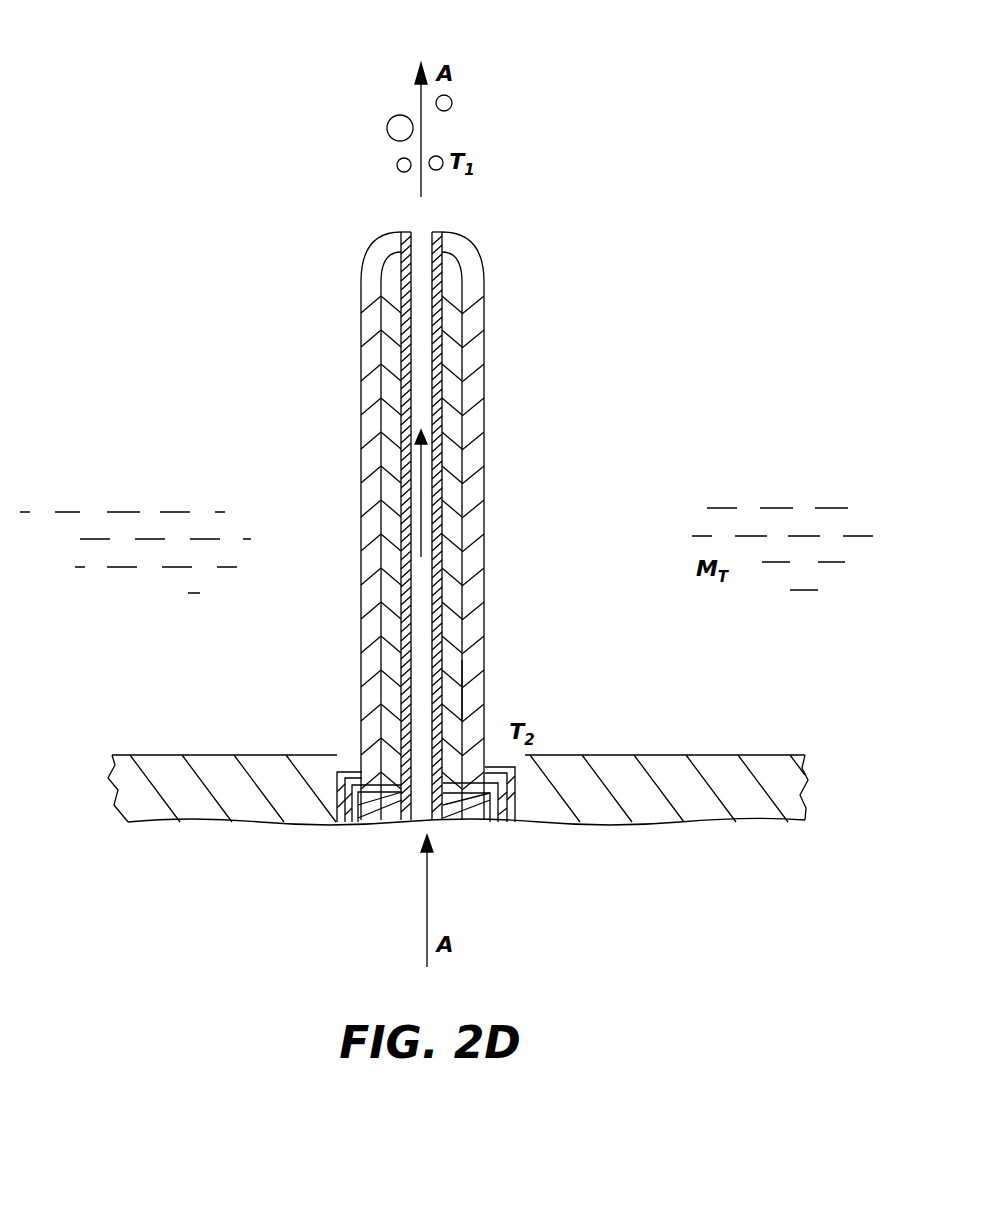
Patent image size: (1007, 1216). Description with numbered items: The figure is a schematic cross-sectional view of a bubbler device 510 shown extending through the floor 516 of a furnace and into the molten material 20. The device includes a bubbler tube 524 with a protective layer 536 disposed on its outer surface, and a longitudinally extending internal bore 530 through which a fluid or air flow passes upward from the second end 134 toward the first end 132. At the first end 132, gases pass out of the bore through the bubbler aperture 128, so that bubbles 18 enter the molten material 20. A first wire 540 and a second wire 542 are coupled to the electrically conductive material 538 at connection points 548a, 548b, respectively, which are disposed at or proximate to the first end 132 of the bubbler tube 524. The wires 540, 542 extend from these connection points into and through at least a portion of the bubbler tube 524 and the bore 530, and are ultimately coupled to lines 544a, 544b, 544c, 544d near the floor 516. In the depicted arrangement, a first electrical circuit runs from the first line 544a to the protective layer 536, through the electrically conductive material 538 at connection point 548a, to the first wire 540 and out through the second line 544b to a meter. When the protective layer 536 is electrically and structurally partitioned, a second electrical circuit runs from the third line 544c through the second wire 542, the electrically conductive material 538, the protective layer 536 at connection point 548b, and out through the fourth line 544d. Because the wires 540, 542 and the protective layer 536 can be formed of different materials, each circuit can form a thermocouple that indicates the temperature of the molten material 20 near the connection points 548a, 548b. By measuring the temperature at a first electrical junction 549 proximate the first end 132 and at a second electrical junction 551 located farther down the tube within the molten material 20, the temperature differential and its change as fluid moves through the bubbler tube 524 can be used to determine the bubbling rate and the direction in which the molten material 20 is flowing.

The bubbler device 510 is at (258, 102).
The first end 132 is at (372, 205).
The bubbler aperture 128 is at (415, 210).
The bubbles 18 is at (460, 133).
The connection point 548a is at (400, 232).
The connection point 548b is at (440, 232).
The first electrical junction 549 is at (400, 240).
The electrically conductive material 538 is at (388, 243).
The bore 530 is at (420, 345).
The first wire 540 is at (400, 378).
The bubbler tube 524 is at (385, 450).
The protective layer 536 is at (373, 522).
The second wire 542 is at (442, 595).
The second electrical junction 551 is at (463, 688).
The molten material 20 is at (130, 540).
The floor 516 is at (150, 785).
The first line 544a is at (335, 822).
The second line 544b is at (348, 822).
The third line 544c is at (500, 822).
The fourth line 544d is at (528, 822).
The second end 134 is at (465, 862).